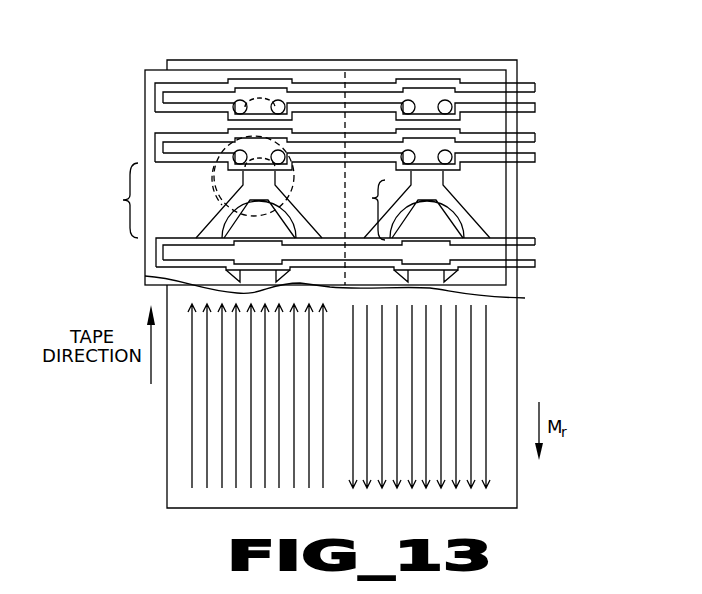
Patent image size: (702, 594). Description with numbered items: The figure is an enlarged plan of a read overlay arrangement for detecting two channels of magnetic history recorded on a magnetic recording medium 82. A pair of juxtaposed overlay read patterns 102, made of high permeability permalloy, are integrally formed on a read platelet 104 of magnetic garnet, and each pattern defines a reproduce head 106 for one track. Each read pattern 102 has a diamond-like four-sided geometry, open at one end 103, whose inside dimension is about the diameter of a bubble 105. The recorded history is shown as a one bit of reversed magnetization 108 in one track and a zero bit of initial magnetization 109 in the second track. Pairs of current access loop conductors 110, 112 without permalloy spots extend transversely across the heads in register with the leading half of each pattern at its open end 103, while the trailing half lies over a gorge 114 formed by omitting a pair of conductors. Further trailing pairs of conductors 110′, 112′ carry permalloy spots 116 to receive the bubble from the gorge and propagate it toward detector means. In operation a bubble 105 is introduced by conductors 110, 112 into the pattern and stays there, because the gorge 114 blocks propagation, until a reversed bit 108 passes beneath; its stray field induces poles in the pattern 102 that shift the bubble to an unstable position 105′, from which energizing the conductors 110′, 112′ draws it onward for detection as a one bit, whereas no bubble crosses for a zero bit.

The magnetic recording medium 82 is at (167, 457).
The overlay read pattern 102 is at (160, 250).
The open end 103 is at (150, 276).
The read platelet 104 is at (134, 142).
The bubble 105 is at (280, 224).
The unstable bubble position 105′ is at (218, 203).
The reproduce head 106 is at (266, 70).
The reversed magnetization bit 108 is at (203, 470).
The initial magnetization bit 109 is at (488, 374).
The current access conductor 110 is at (535, 265).
The current access conductor 110′ is at (535, 164).
The current access conductor 112 is at (535, 240).
The current access conductor 112′ is at (535, 140).
The gorge 114 is at (239, 201).
The permalloy spots 116 is at (458, 56).